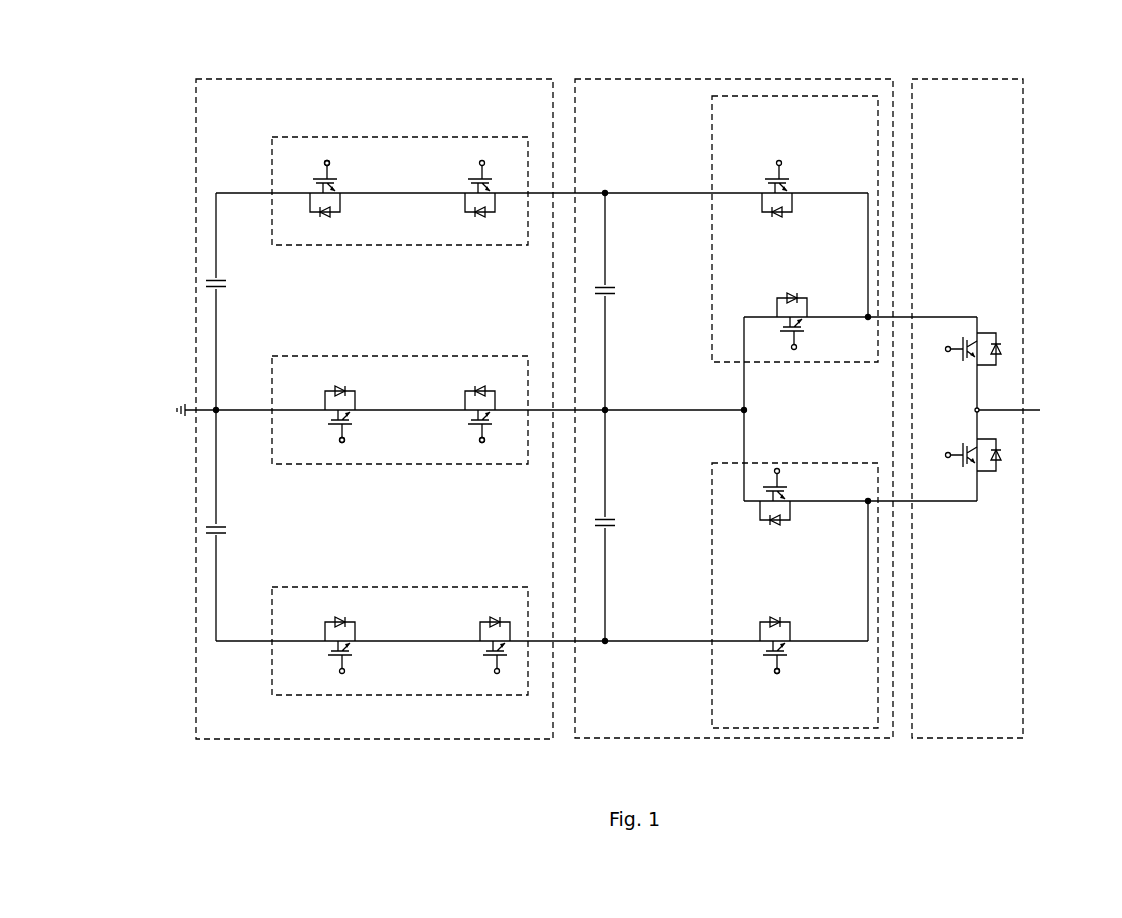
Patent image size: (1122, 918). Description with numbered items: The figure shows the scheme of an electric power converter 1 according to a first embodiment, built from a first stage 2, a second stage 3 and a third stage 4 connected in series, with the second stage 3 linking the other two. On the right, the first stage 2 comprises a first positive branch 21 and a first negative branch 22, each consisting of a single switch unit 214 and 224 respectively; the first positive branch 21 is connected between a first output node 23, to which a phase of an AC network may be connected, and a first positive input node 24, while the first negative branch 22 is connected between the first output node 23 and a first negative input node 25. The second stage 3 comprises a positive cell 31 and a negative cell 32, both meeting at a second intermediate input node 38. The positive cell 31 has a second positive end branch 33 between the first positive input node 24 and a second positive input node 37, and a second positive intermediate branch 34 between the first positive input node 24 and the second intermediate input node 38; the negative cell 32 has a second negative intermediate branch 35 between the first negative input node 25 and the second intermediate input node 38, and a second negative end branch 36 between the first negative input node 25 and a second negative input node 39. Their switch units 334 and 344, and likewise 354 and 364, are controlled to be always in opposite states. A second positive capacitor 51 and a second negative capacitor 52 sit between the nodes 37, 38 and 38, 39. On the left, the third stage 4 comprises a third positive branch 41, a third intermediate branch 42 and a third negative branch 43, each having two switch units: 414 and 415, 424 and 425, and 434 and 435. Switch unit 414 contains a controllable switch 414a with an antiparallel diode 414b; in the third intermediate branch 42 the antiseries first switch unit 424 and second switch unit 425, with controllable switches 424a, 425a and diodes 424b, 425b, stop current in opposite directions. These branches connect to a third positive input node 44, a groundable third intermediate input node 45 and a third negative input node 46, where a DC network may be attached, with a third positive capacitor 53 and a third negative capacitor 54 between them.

The electric power converter 1 is at (145, 142).
The first stage 2 is at (972, 79).
The second stage 3 is at (733, 79).
The third stage 4 is at (372, 79).
The first positive branch 21 is at (1012, 344).
The first negative branch 22 is at (1012, 464).
The first output node 23 is at (975, 410).
The first positive input node 24 is at (868, 320).
The first negative input node 25 is at (868, 498).
The positive cell 31 is at (712, 182).
The negative cell 32 is at (712, 631).
The second positive end branch 33 is at (764, 172).
The second positive intermediate branch 34 is at (766, 299).
The second negative intermediate branch 35 is at (801, 527).
The second negative end branch 36 is at (800, 660).
The second positive input node 37 is at (605, 192).
The second intermediate input node 38 is at (605, 410).
The second negative input node 39 is at (605, 645).
The third positive branch 41 is at (272, 167).
The third intermediate branch 42 is at (272, 402).
The third negative branch 43 is at (272, 622).
The third positive input node 44 is at (216, 193).
The third intermediate input node 45 is at (216, 412).
The third negative input node 46 is at (216, 641).
The second positive capacitor 51 is at (618, 290).
The second negative capacitor 52 is at (618, 522).
The third positive capacitor 53 is at (208, 286).
The third negative capacitor 54 is at (240, 525).
The switch unit 214 is at (989, 332).
The switch unit 224 is at (989, 482).
The switch unit 334 is at (797, 175).
The switch unit 344 is at (810, 298).
The switch unit 354 is at (765, 530).
The switch unit 364 is at (768, 666).
The switch unit 414 is at (338, 178).
The controllable switch 414a is at (322, 178).
The diode 414b is at (324, 218).
The switch unit 415 is at (468, 178).
The first switch unit 424 is at (352, 372).
The controllable switch 424a is at (348, 428).
The diode 424b is at (340, 392).
The second switch unit 425 is at (470, 372).
The controllable switch 425a is at (488, 428).
The diode 425b is at (482, 390).
The first switch unit 434 is at (350, 606).
The second switch unit 435 is at (490, 606).